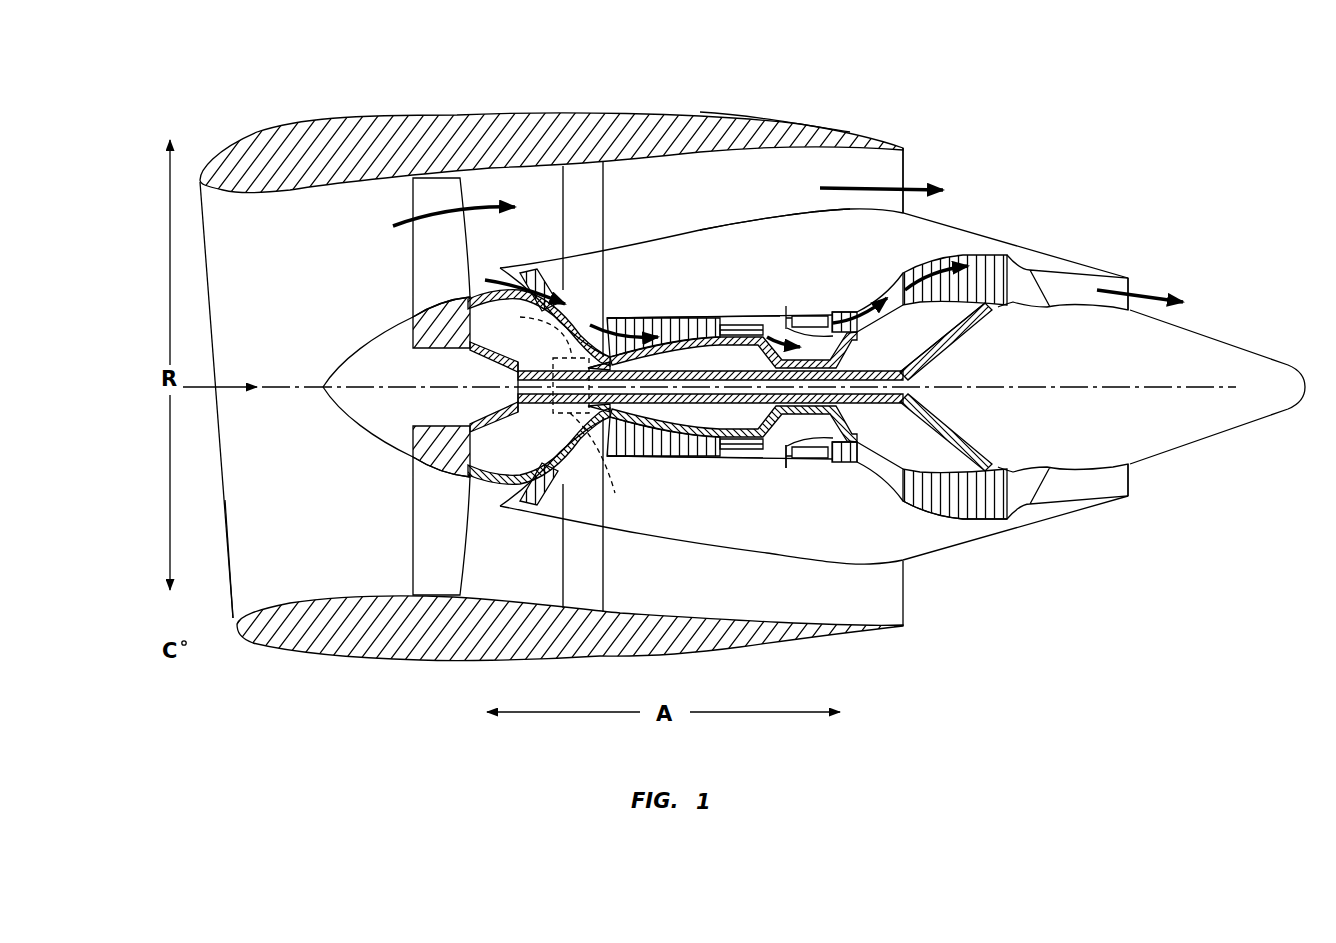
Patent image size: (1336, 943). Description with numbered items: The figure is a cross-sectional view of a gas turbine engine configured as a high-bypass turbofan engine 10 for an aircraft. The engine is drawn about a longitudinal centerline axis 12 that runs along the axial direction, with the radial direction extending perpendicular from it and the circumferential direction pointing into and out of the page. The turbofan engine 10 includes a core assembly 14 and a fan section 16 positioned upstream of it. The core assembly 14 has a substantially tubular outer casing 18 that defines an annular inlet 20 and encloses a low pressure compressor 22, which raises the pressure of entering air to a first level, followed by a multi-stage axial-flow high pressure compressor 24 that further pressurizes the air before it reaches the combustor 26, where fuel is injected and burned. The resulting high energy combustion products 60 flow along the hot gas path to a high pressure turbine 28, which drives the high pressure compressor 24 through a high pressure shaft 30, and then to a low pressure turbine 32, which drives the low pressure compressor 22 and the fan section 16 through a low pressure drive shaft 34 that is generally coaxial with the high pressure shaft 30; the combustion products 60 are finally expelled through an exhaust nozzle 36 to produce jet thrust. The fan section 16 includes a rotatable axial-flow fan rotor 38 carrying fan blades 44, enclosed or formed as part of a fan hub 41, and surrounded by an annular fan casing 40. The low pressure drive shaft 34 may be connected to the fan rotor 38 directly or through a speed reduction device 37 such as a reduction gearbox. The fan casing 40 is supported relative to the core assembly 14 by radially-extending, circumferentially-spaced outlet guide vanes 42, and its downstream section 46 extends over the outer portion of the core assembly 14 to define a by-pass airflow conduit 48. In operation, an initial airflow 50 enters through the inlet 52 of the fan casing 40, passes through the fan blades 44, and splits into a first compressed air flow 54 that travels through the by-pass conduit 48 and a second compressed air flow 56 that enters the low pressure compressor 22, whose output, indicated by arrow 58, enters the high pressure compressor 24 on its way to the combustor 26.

The turbofan engine 10 is at (1048, 130).
The centerline axis 12 is at (1075, 385).
The core assembly 14 is at (720, 288).
The fan section 16 is at (352, 108).
The outer casing 18 is at (760, 554).
The annular inlet 20 is at (515, 492).
The low pressure compressor 22 is at (565, 460).
The high pressure compressor 24 is at (633, 445).
The combustor 26 is at (800, 452).
The high pressure turbine 28 is at (856, 450).
The high pressure shaft 30 is at (836, 340).
The low pressure turbine 32 is at (980, 521).
The low pressure drive shaft 34 is at (567, 372).
The exhaust nozzle 36 is at (1130, 282).
The speed reduction device 37 is at (565, 410).
The fan rotor 38 is at (467, 352).
The fan casing 40 is at (460, 661).
The fan hub 41 is at (363, 427).
The outlet guide vanes 42 is at (604, 196).
The fan blades 44 is at (413, 538).
The downstream section 46 is at (762, 125).
The by-pass airflow conduit 48 is at (728, 209).
The initial airflow 50 is at (227, 383).
The inlet 52 is at (232, 572).
The first compressed air flow 54 is at (425, 222).
The second compressed air flow 56 is at (500, 268).
The airflow entering HP compressor 58 is at (598, 318).
The combustion products 60 is at (833, 320).